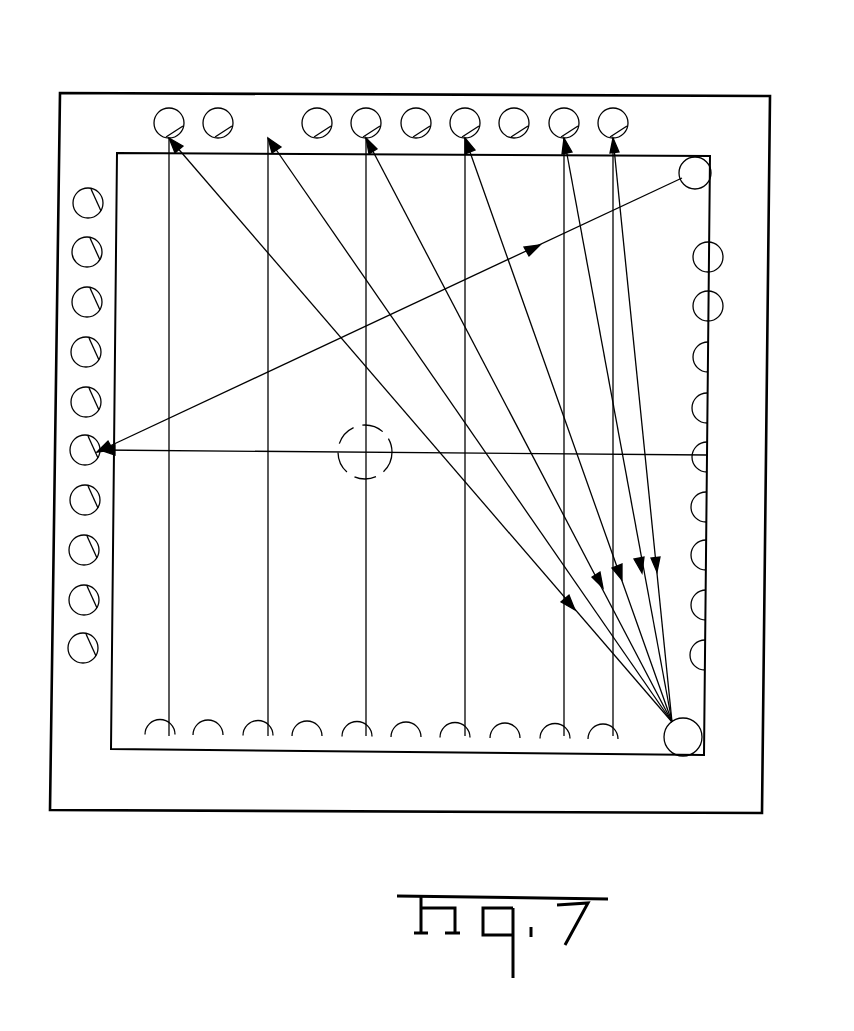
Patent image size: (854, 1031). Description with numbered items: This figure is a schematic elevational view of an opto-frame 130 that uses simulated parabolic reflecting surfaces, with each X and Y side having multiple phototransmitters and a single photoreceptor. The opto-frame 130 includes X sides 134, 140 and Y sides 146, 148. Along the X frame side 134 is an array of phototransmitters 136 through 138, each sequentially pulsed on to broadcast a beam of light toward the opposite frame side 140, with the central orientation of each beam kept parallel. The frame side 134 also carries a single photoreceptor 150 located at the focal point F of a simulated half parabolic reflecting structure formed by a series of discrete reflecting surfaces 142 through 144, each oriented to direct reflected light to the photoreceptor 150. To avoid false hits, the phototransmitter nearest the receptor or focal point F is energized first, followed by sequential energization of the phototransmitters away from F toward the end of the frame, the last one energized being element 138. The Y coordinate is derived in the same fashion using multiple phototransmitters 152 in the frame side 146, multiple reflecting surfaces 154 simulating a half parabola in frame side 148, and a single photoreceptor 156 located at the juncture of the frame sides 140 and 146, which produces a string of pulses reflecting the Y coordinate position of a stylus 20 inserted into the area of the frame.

The stylus 20 is at (387, 462).
The opto-frame 130 is at (265, 825).
The X frame side 134 is at (482, 753).
The phototransmitter 136 is at (605, 752).
The phototransmitter 138 is at (158, 747).
The X frame side 140 is at (338, 155).
The discrete reflecting surface 142 is at (176, 118).
The discrete reflecting surface 144 is at (627, 120).
The Y frame side 146 is at (703, 290).
The Y frame side 148 is at (117, 231).
The photoreceptor 150 is at (690, 737).
The phototransmitters 152 is at (700, 458).
The reflecting surfaces 154 is at (92, 457).
The photoreceptor 156 is at (712, 157).
The focal point F is at (683, 168).